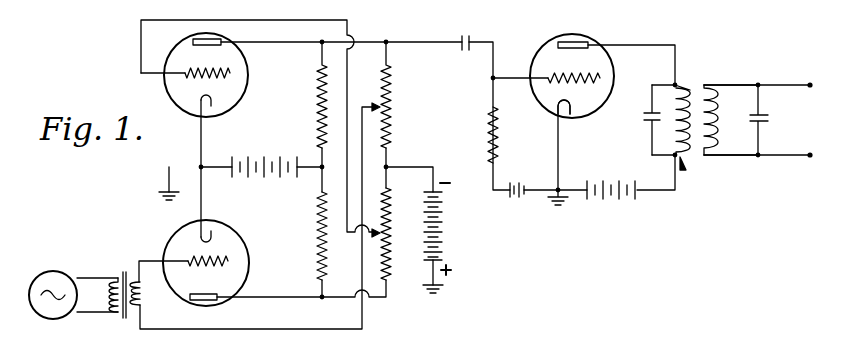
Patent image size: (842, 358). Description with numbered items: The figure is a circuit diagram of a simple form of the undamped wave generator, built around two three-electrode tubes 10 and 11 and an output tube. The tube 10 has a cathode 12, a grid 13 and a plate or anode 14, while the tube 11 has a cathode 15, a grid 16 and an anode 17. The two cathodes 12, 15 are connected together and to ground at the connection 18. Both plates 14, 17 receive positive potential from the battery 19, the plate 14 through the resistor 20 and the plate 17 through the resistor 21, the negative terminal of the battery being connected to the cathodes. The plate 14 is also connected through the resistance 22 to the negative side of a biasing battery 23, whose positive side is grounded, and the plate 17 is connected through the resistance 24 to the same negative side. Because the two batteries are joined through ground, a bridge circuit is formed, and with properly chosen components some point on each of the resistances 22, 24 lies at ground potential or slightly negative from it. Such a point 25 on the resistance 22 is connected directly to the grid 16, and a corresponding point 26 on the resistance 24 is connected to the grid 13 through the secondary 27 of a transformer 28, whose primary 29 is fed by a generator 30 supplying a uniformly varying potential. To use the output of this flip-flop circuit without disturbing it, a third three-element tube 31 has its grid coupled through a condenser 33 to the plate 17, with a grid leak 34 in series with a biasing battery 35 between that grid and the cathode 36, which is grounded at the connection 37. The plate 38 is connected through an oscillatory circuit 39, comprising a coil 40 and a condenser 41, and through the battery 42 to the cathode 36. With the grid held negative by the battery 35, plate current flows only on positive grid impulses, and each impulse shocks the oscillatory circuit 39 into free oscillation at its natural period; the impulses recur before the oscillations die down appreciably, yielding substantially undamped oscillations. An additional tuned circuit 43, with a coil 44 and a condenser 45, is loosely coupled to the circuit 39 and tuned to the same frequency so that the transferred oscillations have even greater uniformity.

The three-electrode tube 10 is at (164, 240).
The three-electrode tube 11 is at (162, 56).
The cathode 12 is at (212, 236).
The grid 13 is at (228, 261).
The plate or anode 14 is at (204, 300).
The cathode 15 is at (196, 104).
The grid 16 is at (230, 73).
The anode 17 is at (210, 40).
The ground connection 18 is at (164, 188).
The battery 19 is at (260, 154).
The resistor 20 is at (316, 255).
The resistor 21 is at (317, 100).
The resistance 22 is at (390, 250).
The biasing battery 23 is at (442, 244).
The resistance 24 is at (391, 91).
The point on resistance 22 25 is at (374, 240).
The point on resistance 24 26 is at (376, 106).
The secondary 27 is at (143, 304).
The transformer 28 is at (124, 318).
The primary 29 is at (108, 302).
The generator 30 is at (58, 272).
The three-element tube 31 is at (536, 54).
The condenser 33 is at (468, 26).
The grid leak 34 is at (488, 141).
The biasing battery 35 is at (517, 179).
The cathode 36 is at (580, 114).
The ground connection 37 is at (562, 194).
The plate 38 is at (598, 28).
The oscillatory circuit 39 is at (683, 166).
The coil 40 is at (683, 90).
The condenser 41 is at (648, 112).
The battery 42 is at (608, 206).
The tuned circuit 43 is at (737, 92).
The coil 44 is at (724, 150).
The condenser 45 is at (765, 126).